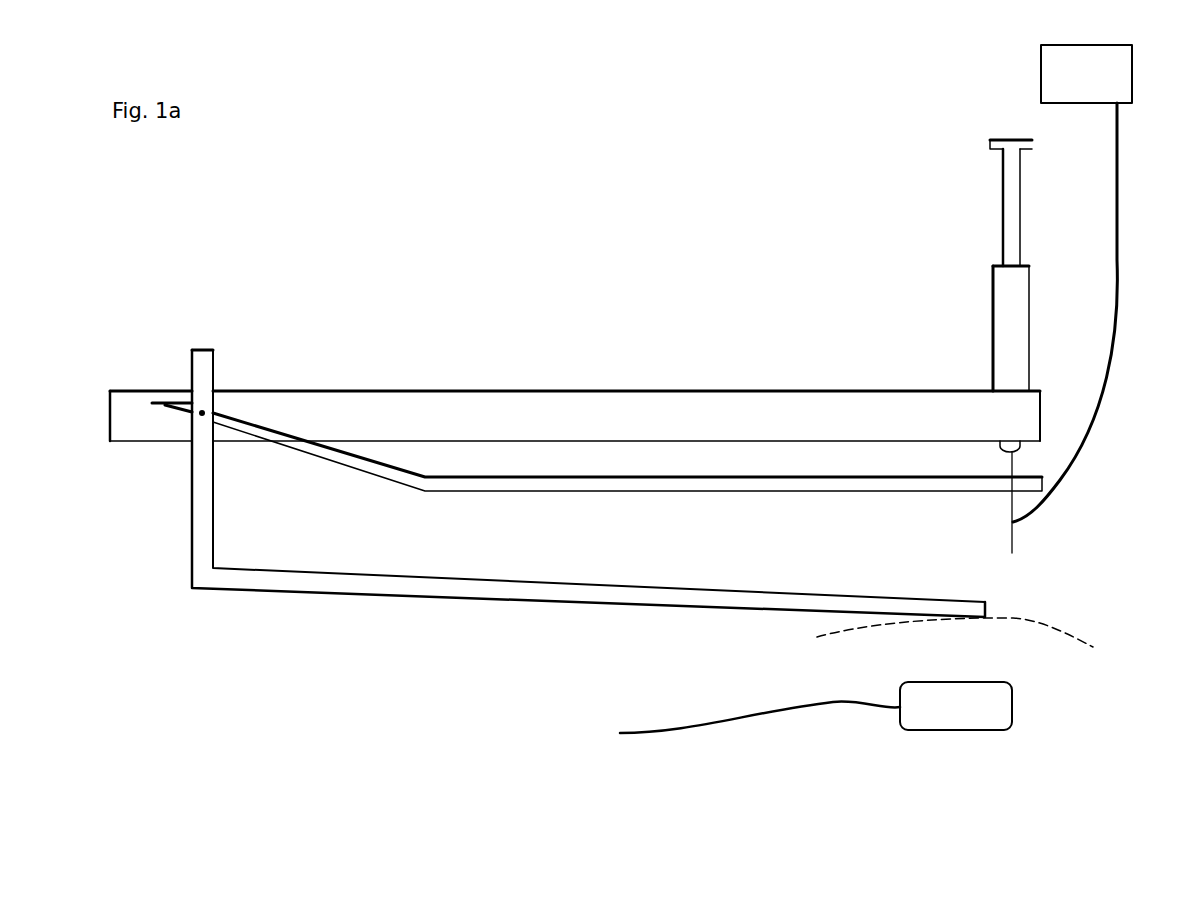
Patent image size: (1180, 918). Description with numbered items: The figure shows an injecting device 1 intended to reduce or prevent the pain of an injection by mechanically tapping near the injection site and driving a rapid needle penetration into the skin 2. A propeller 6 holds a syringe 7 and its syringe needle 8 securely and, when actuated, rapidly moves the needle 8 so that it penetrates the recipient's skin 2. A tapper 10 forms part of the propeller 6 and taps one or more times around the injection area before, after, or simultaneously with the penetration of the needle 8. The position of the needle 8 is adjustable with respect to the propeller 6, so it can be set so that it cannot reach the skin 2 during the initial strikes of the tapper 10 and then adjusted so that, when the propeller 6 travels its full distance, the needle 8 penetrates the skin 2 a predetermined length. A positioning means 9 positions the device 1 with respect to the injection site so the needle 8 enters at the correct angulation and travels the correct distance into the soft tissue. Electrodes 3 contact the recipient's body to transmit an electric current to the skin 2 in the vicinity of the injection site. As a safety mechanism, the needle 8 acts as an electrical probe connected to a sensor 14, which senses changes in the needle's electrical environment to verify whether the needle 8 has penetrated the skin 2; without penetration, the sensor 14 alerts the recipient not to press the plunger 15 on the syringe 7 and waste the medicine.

The injecting device 1 is at (465, 457).
The skin 2 is at (1025, 623).
The electrodes 3 is at (943, 713).
The propeller 6 is at (730, 413).
The syringe 7 is at (1007, 317).
The syringe needle 8 is at (1015, 530).
The positioning means 9 is at (415, 588).
The tapper 10 is at (528, 485).
The sensor 14 is at (1075, 76).
The plunger 15 is at (1015, 197).